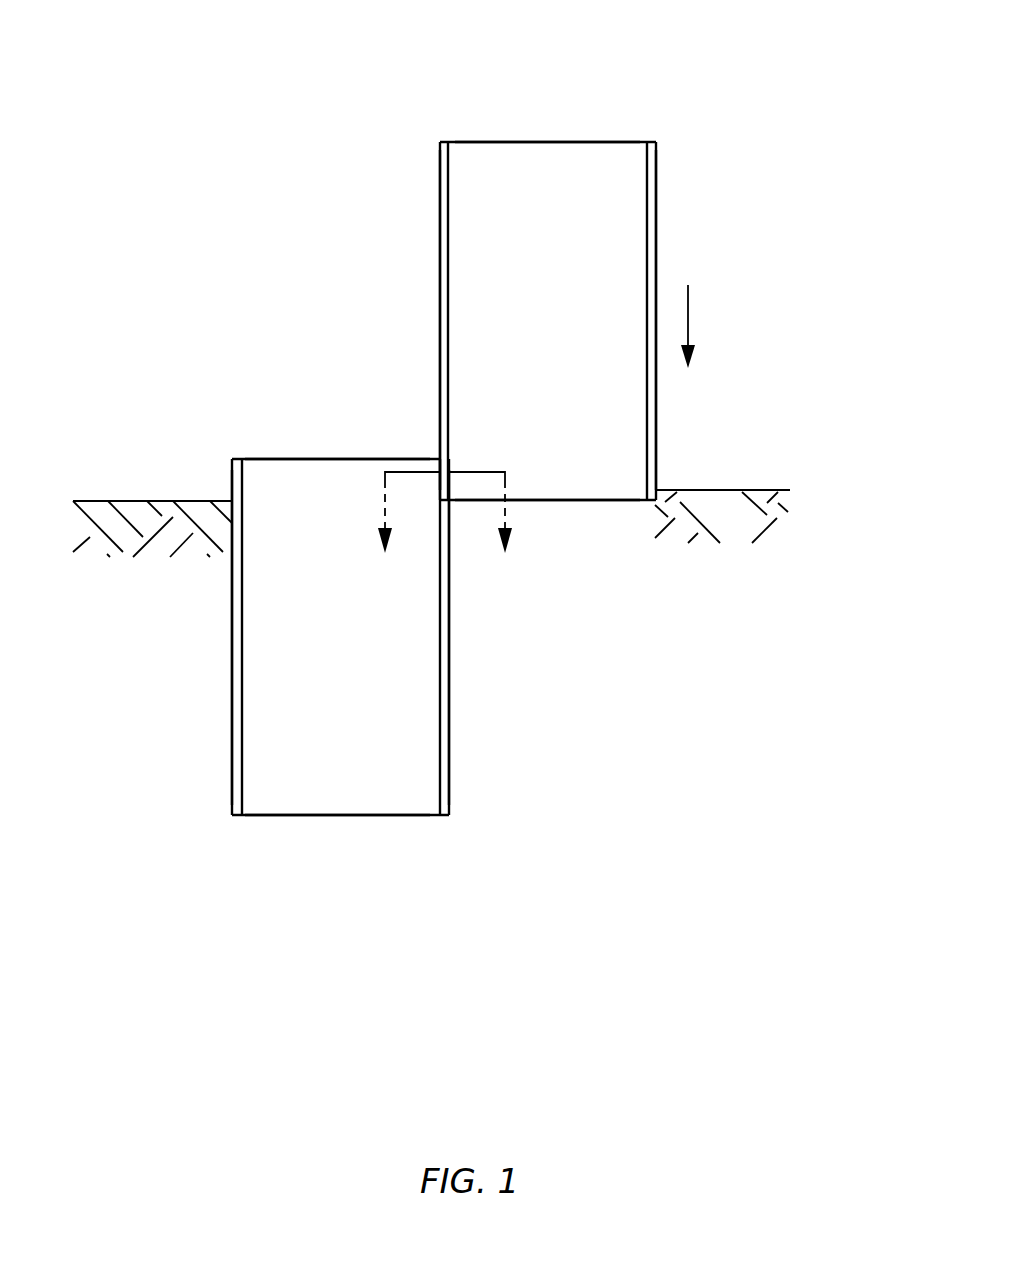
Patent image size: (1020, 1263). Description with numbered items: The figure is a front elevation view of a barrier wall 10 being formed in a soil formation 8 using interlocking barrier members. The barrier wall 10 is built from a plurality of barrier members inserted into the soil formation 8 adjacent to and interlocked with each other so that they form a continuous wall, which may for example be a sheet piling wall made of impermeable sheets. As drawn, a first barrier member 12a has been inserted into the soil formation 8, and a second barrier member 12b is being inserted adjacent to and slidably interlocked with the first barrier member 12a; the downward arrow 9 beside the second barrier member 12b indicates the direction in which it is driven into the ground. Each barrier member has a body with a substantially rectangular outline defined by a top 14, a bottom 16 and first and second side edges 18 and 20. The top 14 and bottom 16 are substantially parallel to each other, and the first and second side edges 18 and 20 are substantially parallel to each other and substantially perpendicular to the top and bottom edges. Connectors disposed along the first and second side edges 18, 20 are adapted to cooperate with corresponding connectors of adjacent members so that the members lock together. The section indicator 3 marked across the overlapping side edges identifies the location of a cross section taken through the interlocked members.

The section line 3- 3 is at (444, 536).
The soil formation 8 is at (708, 490).
The driving direction 9 is at (688, 310).
The barrier wall 10 is at (268, 285).
The first barrier member 12a is at (333, 457).
The second barrier member 12b is at (528, 142).
The top 14 is at (617, 142).
The bottom 16 is at (575, 500).
The first side edge 18 is at (657, 198).
The second side edge 20 is at (440, 197).